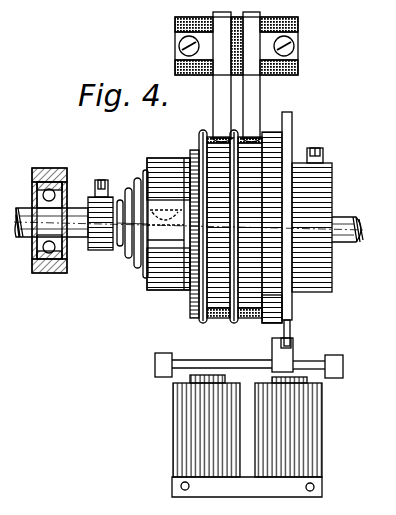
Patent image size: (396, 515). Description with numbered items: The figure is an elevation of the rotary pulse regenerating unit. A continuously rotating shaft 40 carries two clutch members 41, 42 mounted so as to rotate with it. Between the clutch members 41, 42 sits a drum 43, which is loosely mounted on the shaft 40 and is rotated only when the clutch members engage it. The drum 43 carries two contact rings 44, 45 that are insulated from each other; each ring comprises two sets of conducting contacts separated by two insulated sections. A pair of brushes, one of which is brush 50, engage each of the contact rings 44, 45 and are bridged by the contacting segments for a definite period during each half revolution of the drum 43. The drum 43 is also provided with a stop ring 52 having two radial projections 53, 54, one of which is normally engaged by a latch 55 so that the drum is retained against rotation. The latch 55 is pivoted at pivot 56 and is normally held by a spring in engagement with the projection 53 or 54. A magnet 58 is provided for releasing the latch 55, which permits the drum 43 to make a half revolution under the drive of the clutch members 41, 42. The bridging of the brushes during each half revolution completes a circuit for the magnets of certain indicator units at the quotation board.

The shaft 40 is at (352, 221).
The clutch member 41 is at (322, 189).
The clutch member 42 is at (176, 283).
The drum 43 is at (269, 131).
The contact ring 44 is at (251, 318).
The contact ring 45 is at (222, 308).
The brush 50 is at (249, 101).
The stop ring 52 is at (284, 318).
The radial projection 53 is at (290, 338).
The radial projection 54 is at (292, 117).
The latch 55 is at (290, 360).
The pivot 56 is at (190, 366).
The magnet 58 is at (316, 441).